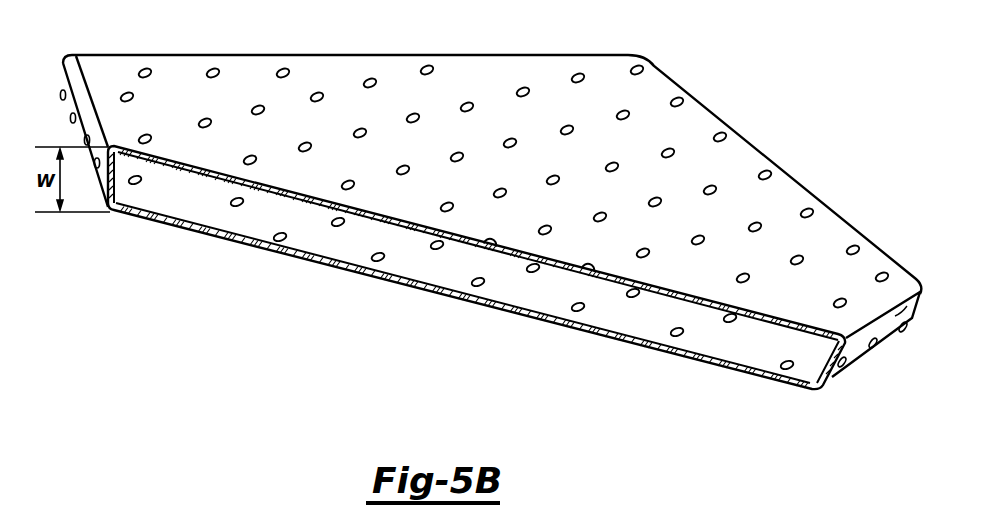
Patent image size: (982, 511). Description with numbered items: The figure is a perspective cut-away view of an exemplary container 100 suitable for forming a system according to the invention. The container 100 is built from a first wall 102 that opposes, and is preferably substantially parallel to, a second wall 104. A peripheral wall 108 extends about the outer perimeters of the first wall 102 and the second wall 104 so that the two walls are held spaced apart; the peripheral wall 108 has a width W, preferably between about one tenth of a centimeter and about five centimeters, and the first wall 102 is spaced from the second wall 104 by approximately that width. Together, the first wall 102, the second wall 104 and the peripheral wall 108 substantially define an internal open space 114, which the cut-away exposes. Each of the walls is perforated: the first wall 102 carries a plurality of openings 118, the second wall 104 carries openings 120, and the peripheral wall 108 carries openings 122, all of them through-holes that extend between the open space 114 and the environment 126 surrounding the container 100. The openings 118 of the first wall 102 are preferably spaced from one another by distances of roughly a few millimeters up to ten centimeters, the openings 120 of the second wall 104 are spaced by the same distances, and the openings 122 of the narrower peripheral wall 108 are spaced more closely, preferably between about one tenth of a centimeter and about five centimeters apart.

The container 100 is at (879, 392).
The first wall 102 is at (762, 203).
The second wall 104 is at (704, 340).
The peripheral wall 108 is at (913, 276).
The internal open space 114 is at (228, 214).
The openings of the first wall 118 is at (722, 133).
The openings of the second wall 120 is at (477, 286).
The openings of the peripheral wall 122 is at (70, 117).
The environment 126 is at (419, 41).